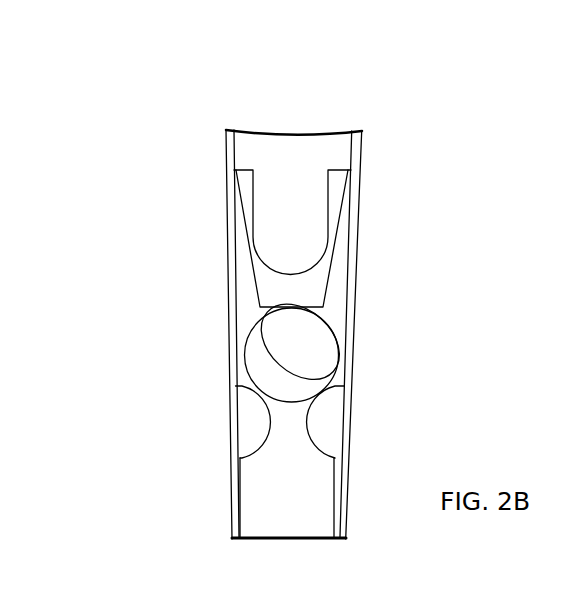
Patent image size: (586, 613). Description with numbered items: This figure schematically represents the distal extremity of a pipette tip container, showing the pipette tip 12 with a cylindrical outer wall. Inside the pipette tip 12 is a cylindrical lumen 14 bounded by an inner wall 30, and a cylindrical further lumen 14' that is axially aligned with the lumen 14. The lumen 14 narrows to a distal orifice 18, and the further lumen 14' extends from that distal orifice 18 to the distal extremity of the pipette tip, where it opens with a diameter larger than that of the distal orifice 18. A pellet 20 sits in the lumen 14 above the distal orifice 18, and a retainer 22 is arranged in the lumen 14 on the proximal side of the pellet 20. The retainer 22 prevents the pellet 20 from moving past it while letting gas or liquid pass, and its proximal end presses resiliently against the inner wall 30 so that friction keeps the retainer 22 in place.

The pipette tip 12 is at (109, 77).
The lumen 14 is at (339, 330).
The further lumen 14' is at (336, 500).
The distal orifice 18 is at (295, 425).
The pellet 20 is at (310, 342).
The retainer 22 is at (323, 287).
The inner wall 30 is at (226, 155).